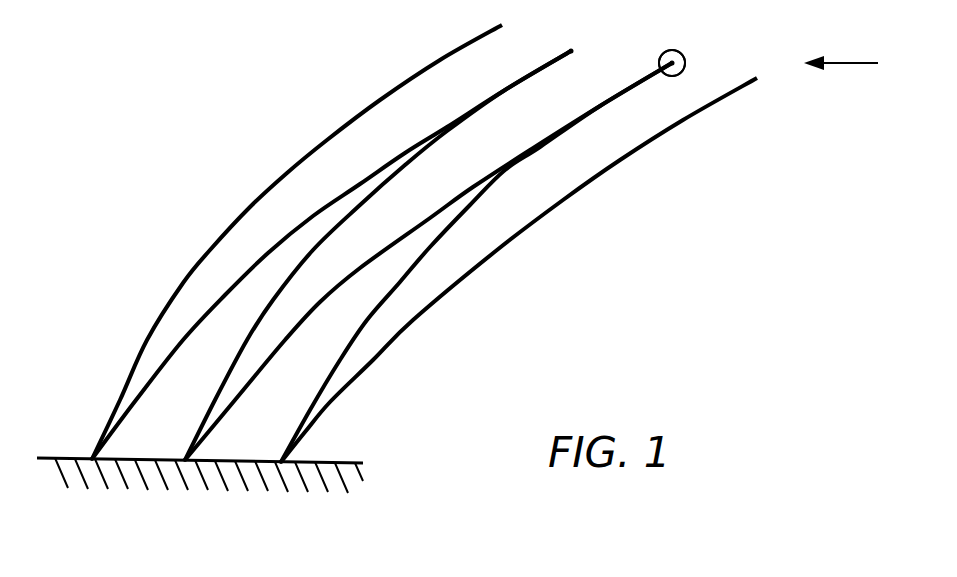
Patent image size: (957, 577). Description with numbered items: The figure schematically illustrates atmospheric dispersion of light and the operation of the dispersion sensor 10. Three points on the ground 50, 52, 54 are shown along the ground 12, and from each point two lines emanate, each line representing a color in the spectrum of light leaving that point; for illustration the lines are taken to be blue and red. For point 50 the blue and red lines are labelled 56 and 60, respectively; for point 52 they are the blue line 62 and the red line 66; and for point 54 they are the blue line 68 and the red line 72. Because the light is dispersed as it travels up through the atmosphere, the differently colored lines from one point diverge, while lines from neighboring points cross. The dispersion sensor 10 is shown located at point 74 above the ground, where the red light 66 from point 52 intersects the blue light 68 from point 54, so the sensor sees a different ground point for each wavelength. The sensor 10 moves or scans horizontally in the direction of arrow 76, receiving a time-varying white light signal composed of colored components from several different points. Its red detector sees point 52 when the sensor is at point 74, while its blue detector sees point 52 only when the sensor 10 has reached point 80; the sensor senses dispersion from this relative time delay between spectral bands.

The dispersion sensor 10 is at (685, 56).
The ground 12 is at (340, 462).
The point on the ground 50 is at (90, 456).
The point on the ground 52 is at (183, 457).
The point on the ground 54 is at (277, 458).
The blue line 56 is at (181, 284).
The red line 60 is at (224, 296).
The blue line 62 is at (272, 301).
The red line 66 is at (300, 324).
The blue line 68 is at (351, 341).
The red line 72 is at (364, 368).
The point above the ground 74 is at (665, 53).
The arrow 76 is at (843, 47).
The point 80 is at (571, 50).